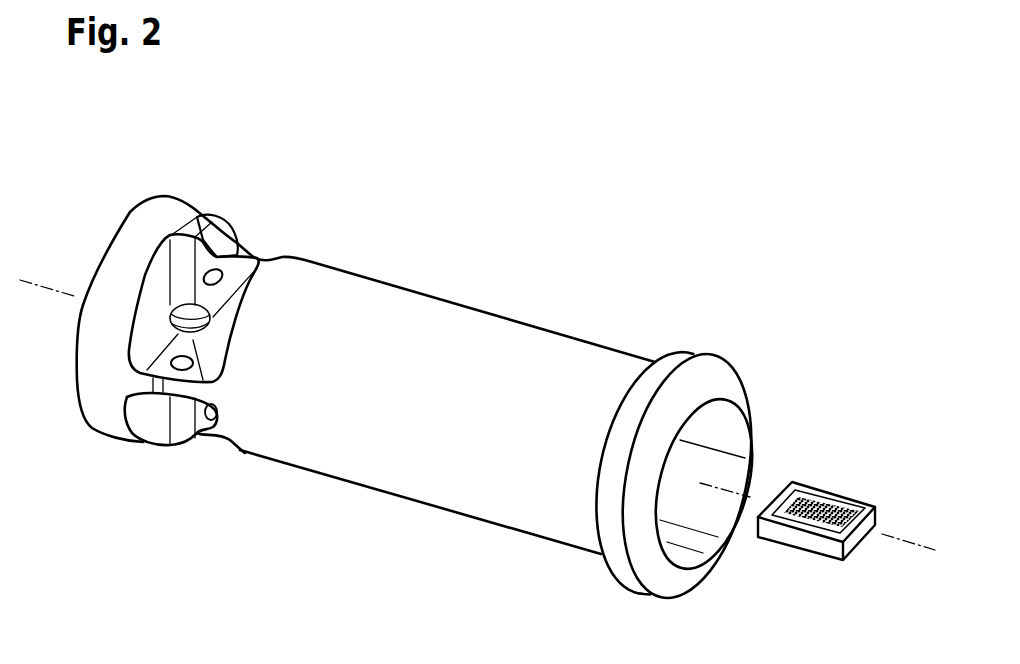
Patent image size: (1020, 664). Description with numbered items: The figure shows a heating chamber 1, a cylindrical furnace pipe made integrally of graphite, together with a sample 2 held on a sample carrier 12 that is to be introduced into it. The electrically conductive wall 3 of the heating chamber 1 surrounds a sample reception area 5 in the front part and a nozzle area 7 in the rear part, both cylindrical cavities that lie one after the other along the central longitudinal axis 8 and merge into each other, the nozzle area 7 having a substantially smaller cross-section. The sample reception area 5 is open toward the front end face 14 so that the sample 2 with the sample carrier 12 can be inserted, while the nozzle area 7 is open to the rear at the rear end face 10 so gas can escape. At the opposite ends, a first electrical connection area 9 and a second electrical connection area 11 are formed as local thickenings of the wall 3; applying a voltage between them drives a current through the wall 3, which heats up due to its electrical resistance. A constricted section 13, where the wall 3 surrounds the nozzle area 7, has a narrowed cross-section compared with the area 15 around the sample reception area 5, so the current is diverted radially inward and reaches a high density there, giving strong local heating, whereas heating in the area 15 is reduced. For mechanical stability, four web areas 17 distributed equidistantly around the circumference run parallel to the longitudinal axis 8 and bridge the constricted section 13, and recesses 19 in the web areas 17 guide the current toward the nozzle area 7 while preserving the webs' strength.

The heating chamber 1 is at (513, 289).
The sample 2 is at (815, 501).
The electrically conductive wall 3 is at (538, 346).
The sample reception area 5 is at (701, 518).
The nozzle area 7 is at (181, 332).
The central longitudinal axis 8 is at (56, 288).
The first electrical connection area 9 is at (175, 204).
The rear end face 10 is at (123, 219).
The second electrical connection area 11 is at (697, 354).
The sample carrier 12 is at (807, 537).
The constricted section 13 is at (185, 433).
The front end face 14 is at (759, 389).
The area surrounding the sample reception area 15 is at (434, 523).
The web areas 17 is at (244, 257).
The recesses 19 is at (213, 274).